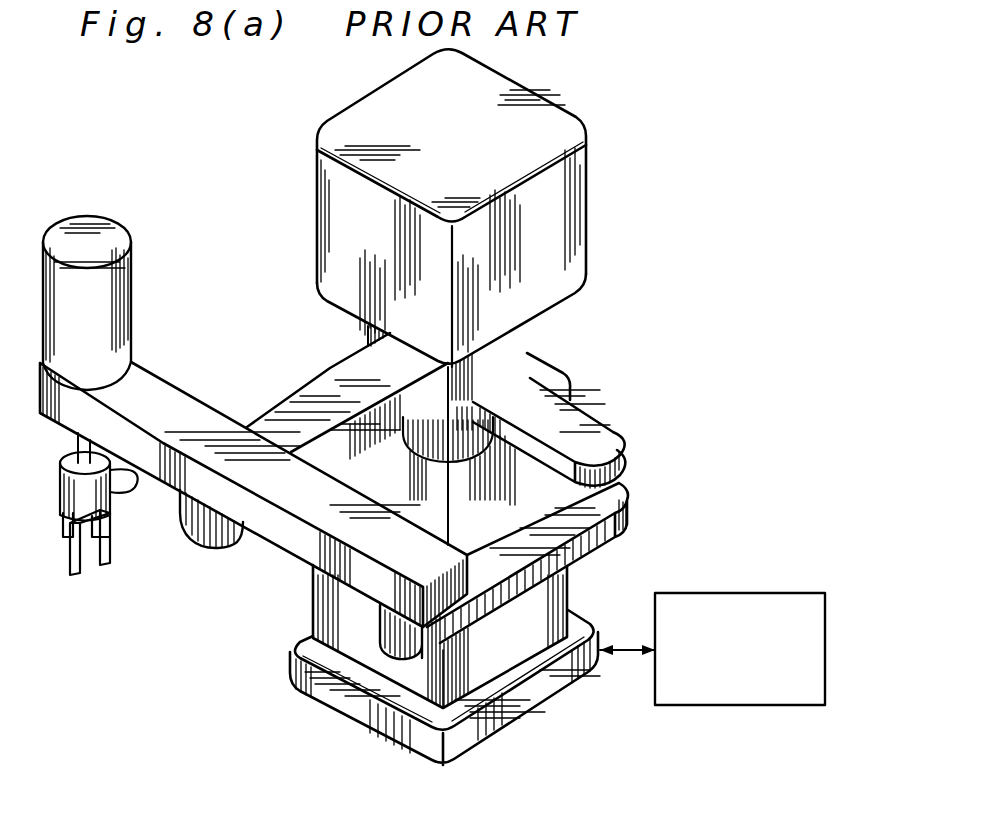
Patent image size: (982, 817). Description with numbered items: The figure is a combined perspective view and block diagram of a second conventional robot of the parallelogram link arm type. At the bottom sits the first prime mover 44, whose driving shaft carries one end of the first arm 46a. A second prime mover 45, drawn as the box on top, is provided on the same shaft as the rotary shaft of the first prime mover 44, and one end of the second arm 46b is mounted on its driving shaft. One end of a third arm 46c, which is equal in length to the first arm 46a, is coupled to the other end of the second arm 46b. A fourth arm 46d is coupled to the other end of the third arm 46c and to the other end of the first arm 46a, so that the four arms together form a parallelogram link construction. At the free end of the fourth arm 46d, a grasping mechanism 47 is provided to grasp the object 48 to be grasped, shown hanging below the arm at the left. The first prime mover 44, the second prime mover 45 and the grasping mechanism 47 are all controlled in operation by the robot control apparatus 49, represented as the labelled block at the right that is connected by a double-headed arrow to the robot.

The first prime mover 44 is at (337, 600).
The second prime mover 45 is at (548, 213).
The first arm 46a is at (312, 397).
The second arm 46b is at (558, 413).
The third arm 46c is at (627, 507).
The fourth arm 46d is at (273, 522).
The grasping mechanism 47 is at (95, 497).
The object to be grasped 48 is at (93, 555).
The robot control apparatus 49 is at (762, 592).